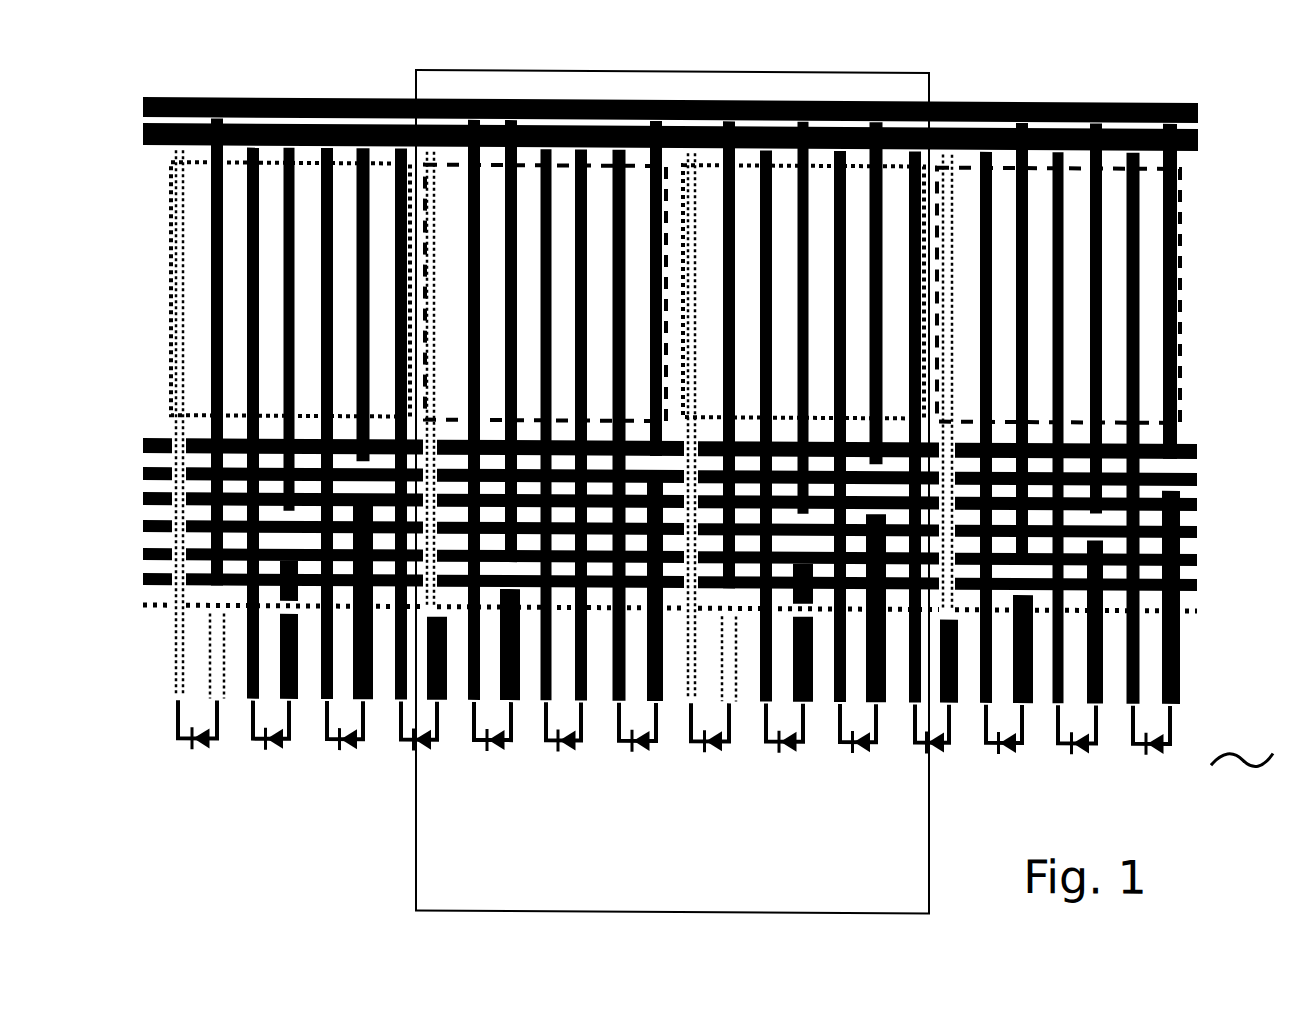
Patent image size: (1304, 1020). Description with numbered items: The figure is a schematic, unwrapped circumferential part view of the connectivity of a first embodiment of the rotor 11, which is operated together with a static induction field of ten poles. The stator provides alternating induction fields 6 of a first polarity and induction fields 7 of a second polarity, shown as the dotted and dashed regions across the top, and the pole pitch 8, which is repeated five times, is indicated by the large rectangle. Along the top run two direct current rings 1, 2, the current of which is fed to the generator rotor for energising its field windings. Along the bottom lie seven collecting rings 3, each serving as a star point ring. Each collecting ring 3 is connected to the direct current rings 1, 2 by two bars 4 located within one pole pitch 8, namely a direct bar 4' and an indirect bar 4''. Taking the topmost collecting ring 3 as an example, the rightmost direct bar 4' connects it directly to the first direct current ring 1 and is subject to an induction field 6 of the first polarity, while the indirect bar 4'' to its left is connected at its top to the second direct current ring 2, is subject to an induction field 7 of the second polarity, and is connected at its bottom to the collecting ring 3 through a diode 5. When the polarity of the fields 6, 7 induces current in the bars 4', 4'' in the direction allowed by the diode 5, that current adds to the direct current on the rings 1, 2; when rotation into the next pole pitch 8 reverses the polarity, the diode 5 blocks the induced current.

The direct current ring 1 is at (1200, 102).
The direct current ring 2 is at (1193, 131).
The collecting rings 3 is at (1198, 449).
The bars 4 is at (724, 411).
The direct bar 4' is at (784, 411).
The indirect bar 4'' is at (719, 375).
The diode 5 is at (1010, 740).
The induction field of first polarity 6 is at (523, 160).
The induction field of second polarity 7 is at (262, 161).
The pole pitch 8 is at (672, 491).
The rotor 11 is at (1242, 737).